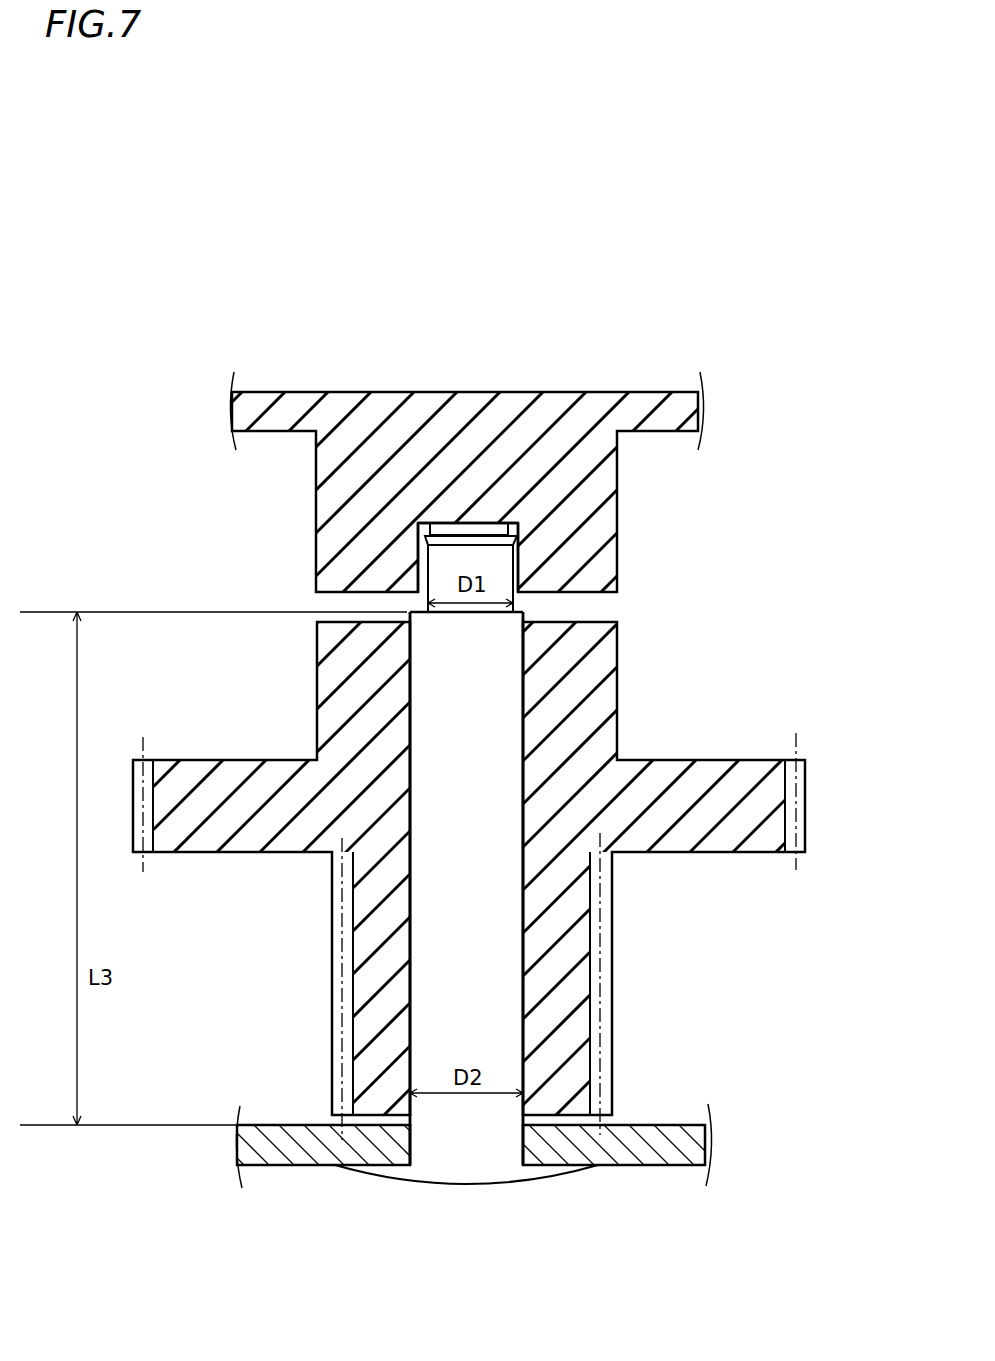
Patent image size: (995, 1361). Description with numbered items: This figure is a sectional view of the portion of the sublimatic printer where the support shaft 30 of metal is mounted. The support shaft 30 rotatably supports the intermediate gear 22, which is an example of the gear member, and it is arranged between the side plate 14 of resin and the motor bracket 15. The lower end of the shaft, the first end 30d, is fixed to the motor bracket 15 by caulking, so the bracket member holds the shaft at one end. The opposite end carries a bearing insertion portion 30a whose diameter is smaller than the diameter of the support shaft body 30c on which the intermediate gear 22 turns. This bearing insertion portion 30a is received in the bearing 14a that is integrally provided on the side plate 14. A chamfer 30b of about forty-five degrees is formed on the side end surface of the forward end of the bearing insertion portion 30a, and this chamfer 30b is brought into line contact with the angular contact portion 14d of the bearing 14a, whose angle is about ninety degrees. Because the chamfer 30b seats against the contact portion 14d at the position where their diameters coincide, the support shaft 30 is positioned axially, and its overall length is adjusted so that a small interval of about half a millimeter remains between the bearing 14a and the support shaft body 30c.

The side plate 14 is at (671, 392).
The bearing 14a is at (616, 534).
The contact portion 14d is at (470, 522).
The intermediate gear 22 is at (740, 758).
The motor bracket 15 is at (668, 1160).
The support shaft 30 is at (531, 785).
The bearing insertion portion 30a is at (436, 562).
The chamfer 30b is at (520, 542).
The support shaft body 30c is at (507, 983).
The first end 30d is at (498, 1184).